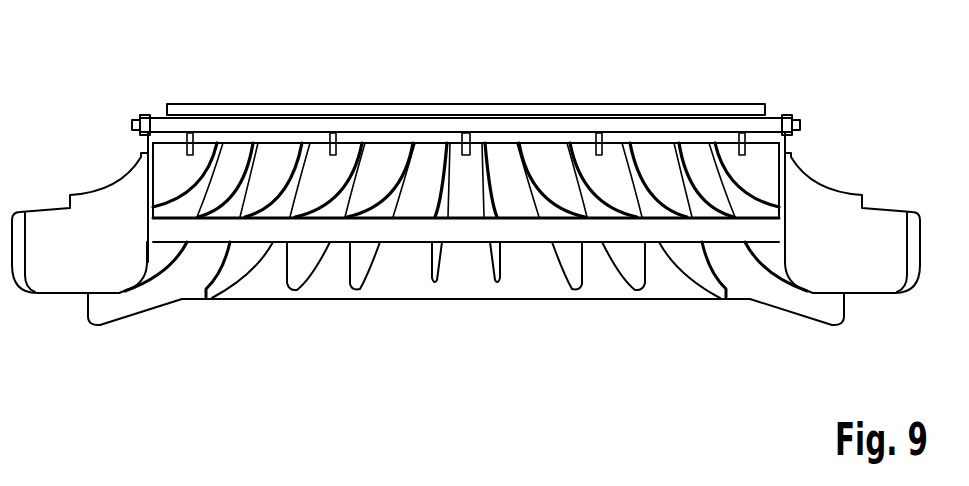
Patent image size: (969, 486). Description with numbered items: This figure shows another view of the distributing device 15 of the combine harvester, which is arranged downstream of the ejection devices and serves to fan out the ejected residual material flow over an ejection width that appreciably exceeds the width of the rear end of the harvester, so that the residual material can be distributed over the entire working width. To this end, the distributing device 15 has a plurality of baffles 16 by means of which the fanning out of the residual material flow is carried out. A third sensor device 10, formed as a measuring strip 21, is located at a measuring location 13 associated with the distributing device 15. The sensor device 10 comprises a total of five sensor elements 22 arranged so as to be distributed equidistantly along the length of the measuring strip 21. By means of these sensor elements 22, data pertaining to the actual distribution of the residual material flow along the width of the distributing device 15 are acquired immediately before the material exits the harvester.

The third sensor device 10 is at (466, 69).
The measuring strip 21 is at (693, 104).
The measuring location 13 is at (120, 136).
The distributing device 15 is at (230, 82).
The baffles 16 is at (310, 270).
The sensor elements 22 is at (333, 132).